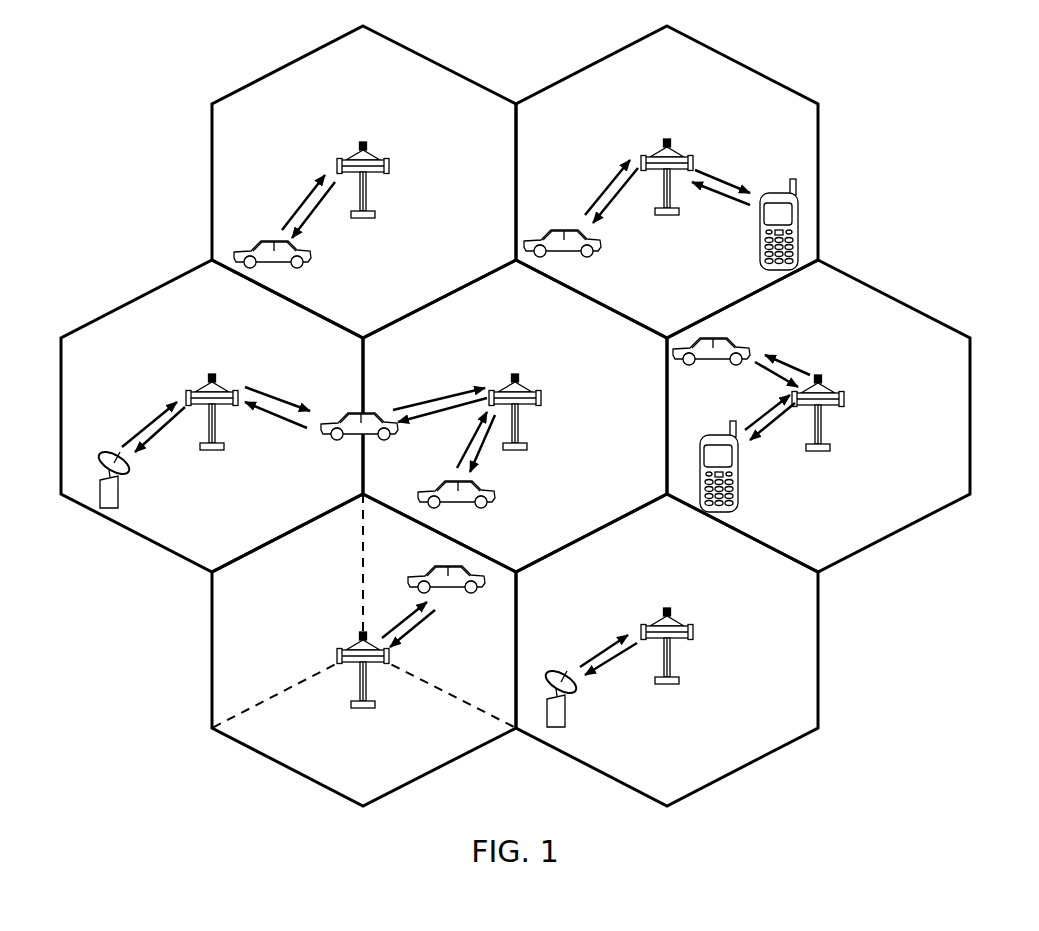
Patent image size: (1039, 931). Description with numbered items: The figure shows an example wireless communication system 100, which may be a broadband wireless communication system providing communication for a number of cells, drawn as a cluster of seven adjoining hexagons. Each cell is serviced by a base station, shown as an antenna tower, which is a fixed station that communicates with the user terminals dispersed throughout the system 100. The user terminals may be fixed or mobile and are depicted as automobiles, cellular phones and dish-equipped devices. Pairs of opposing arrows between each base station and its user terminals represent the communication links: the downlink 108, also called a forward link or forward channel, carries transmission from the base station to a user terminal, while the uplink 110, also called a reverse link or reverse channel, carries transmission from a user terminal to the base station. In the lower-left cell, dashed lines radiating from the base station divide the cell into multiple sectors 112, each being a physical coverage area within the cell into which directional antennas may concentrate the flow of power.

The wireless communication system 100 is at (996, 78).
The downlink 108 is at (311, 218).
The uplink 110 is at (303, 199).
The sector 112 is at (417, 765).